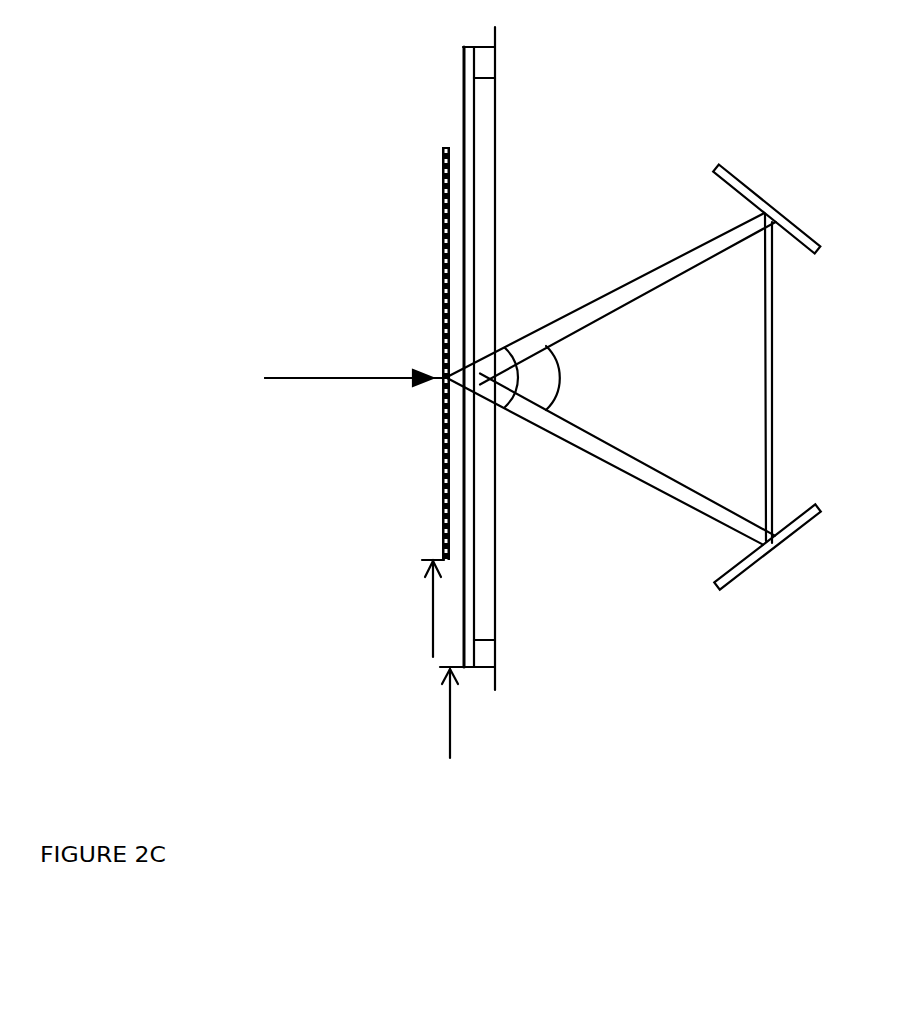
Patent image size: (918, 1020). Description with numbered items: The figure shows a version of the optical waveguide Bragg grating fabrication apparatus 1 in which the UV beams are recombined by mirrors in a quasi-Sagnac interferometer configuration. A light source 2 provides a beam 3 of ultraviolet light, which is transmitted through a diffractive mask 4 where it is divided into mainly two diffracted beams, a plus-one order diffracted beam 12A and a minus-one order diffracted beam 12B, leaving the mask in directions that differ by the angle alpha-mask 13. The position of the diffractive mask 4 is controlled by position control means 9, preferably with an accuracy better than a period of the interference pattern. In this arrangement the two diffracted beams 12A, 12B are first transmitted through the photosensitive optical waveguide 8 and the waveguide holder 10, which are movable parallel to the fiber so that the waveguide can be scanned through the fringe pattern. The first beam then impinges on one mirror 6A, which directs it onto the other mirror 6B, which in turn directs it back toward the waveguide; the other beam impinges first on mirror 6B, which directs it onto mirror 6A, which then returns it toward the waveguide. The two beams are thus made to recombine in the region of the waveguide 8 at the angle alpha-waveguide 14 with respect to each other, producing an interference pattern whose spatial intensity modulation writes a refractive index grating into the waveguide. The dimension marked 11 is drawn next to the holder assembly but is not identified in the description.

The optical waveguide Bragg grating fabrication apparatus 1 is at (325, 233).
The light source 2 is at (329, 378).
The beam of UV light 3 is at (356, 363).
The diffractive mask 4 is at (443, 168).
The mirror 6A is at (766, 352).
The mirror 6B is at (767, 550).
The photosensitive optical waveguide 8 is at (497, 87).
The position control means 9 is at (425, 608).
The waveguide holder 10 is at (462, 75).
The plate thickness 11 is at (462, 713).
The +1 order diffracted beam 12A is at (611, 459).
The -1 order diffracted beam 12B is at (618, 290).
The angle alpha_mask 13 is at (553, 363).
The angle alpha_waveguide 14 is at (557, 393).